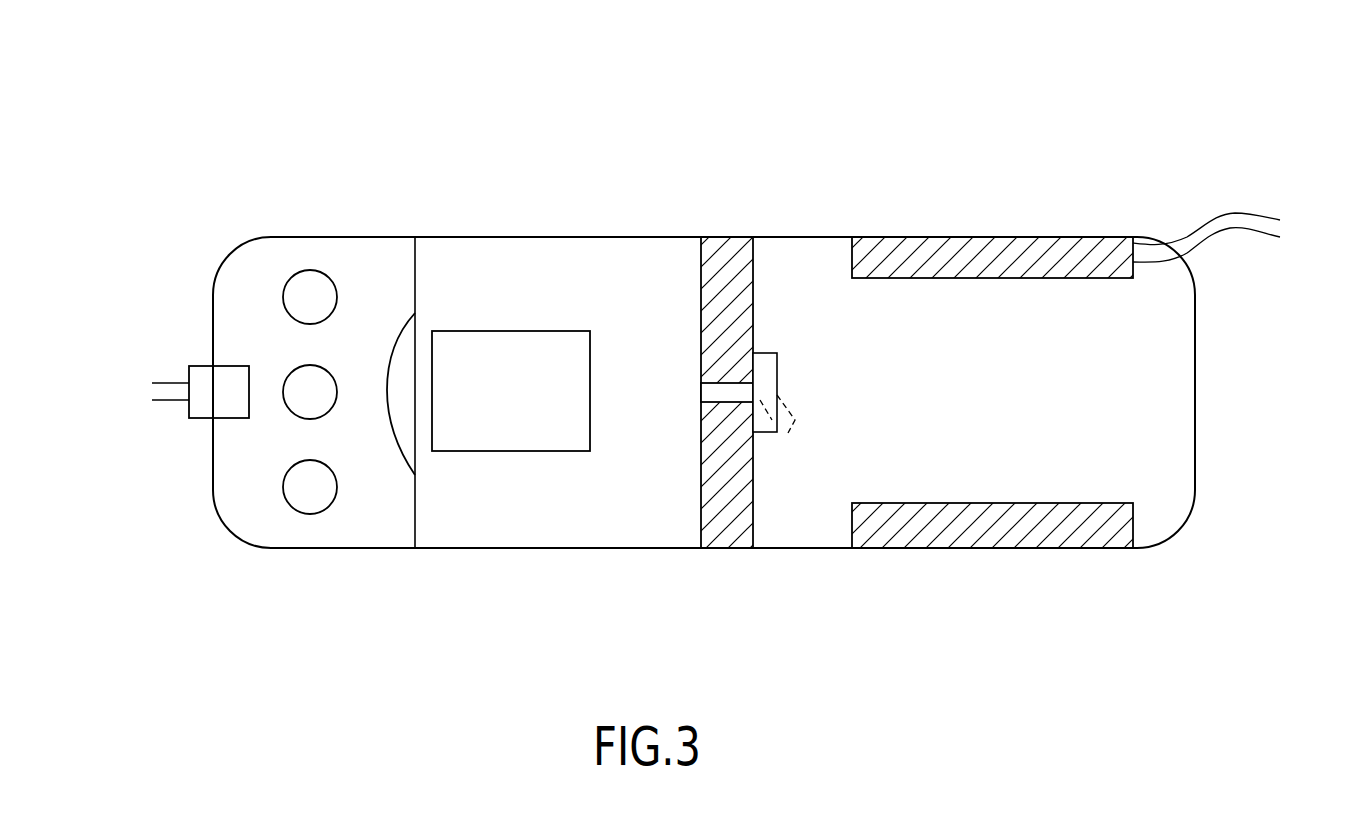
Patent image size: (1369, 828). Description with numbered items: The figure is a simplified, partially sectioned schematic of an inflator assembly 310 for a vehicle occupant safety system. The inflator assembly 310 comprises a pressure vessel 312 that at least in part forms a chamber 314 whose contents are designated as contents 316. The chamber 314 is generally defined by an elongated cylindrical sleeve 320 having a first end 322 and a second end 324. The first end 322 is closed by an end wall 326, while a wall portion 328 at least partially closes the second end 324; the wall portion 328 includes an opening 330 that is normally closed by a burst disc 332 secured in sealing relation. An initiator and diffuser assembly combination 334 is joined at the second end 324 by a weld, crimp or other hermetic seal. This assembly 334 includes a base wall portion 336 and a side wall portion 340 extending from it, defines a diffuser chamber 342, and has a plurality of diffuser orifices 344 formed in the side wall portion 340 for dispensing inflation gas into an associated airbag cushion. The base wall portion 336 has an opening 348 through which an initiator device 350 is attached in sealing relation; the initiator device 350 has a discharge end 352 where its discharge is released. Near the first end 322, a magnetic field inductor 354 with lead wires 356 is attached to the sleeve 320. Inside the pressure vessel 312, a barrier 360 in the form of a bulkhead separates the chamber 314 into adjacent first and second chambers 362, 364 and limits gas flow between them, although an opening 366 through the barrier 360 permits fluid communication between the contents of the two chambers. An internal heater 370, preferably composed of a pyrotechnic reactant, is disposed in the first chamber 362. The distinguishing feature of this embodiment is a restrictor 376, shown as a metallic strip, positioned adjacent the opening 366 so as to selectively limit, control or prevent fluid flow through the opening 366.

The inflator assembly 310 is at (880, 150).
The pressure vessel 312 is at (632, 236).
The chamber 314 is at (528, 548).
The contents 316 is at (623, 505).
The elongated cylindrical sleeve 320 is at (760, 548).
The first end 322 is at (1172, 558).
The second end 324 is at (415, 565).
The end wall 326 is at (1197, 403).
The wall portion 328 is at (415, 508).
The opening 330 is at (422, 305).
The burst disc 332 is at (393, 352).
The initiator and diffuser assembly combination 334 is at (258, 228).
The base wall portion 336 is at (213, 320).
The side wall portion 340 is at (310, 550).
The diffuser chamber 342 is at (253, 297).
The diffuser orifices 344 is at (290, 505).
The opening 348 is at (215, 366).
The initiator device 350 is at (210, 403).
The discharge end 352 is at (250, 392).
The magnetic field inductor 354 is at (980, 237).
The lead wires 356 is at (1235, 227).
The barrier 360 is at (725, 263).
The first chamber 362 is at (793, 273).
The second chamber 364 is at (480, 515).
The opening 366 is at (728, 402).
The internal heater 370 is at (497, 405).
The restrictor 376 is at (772, 362).